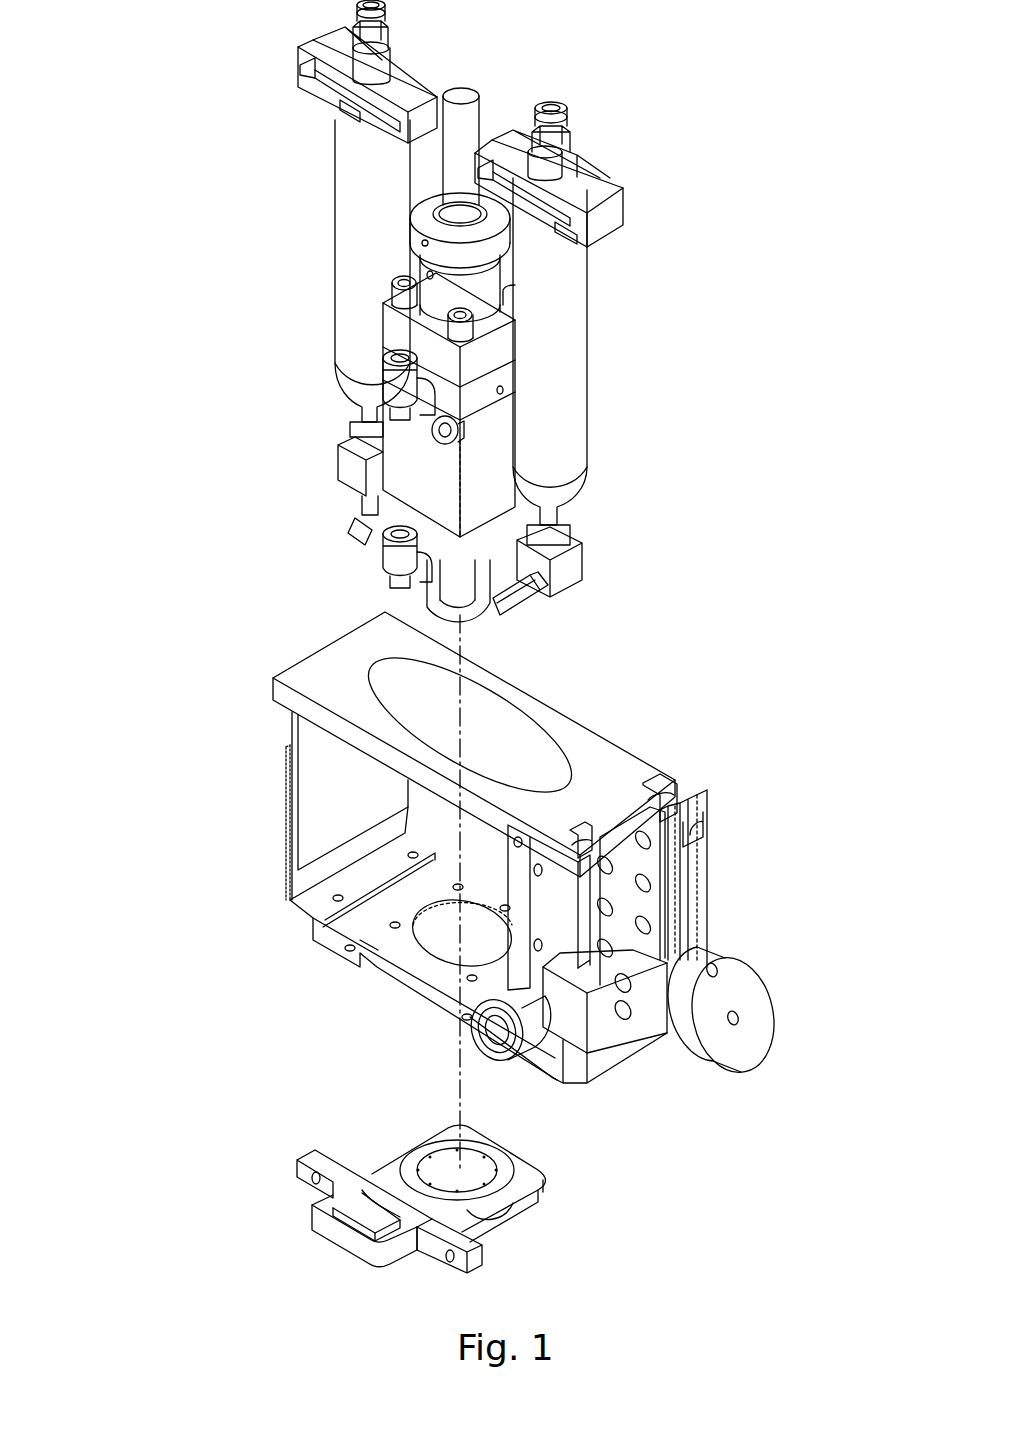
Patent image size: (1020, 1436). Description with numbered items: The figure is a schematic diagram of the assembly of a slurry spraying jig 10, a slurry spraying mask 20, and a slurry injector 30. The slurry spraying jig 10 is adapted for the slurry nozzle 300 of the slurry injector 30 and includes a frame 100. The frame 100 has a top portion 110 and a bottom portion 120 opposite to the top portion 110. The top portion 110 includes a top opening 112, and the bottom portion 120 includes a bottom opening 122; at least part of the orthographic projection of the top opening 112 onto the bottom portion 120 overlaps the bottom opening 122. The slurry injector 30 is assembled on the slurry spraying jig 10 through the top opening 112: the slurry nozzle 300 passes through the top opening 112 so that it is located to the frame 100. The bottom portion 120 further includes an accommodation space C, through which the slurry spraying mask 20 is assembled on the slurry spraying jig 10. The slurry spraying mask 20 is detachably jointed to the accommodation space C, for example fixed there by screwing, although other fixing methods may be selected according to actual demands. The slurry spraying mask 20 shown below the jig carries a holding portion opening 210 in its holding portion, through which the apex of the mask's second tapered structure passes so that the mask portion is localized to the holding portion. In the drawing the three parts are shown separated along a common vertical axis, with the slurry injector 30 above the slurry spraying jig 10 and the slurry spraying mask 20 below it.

The slurry spraying jig 10 is at (735, 786).
The slurry spraying mask 20 is at (572, 1170).
The slurry injector 30 is at (668, 163).
The frame 100 is at (125, 242).
The top portion 110 is at (292, 668).
The top opening 112 is at (380, 662).
The bottom portion 120 is at (320, 930).
The bottom opening 122 is at (425, 915).
The holding portion opening 210 is at (421, 1142).
The slurry nozzle 300 is at (470, 613).
The accommodation space C is at (376, 980).